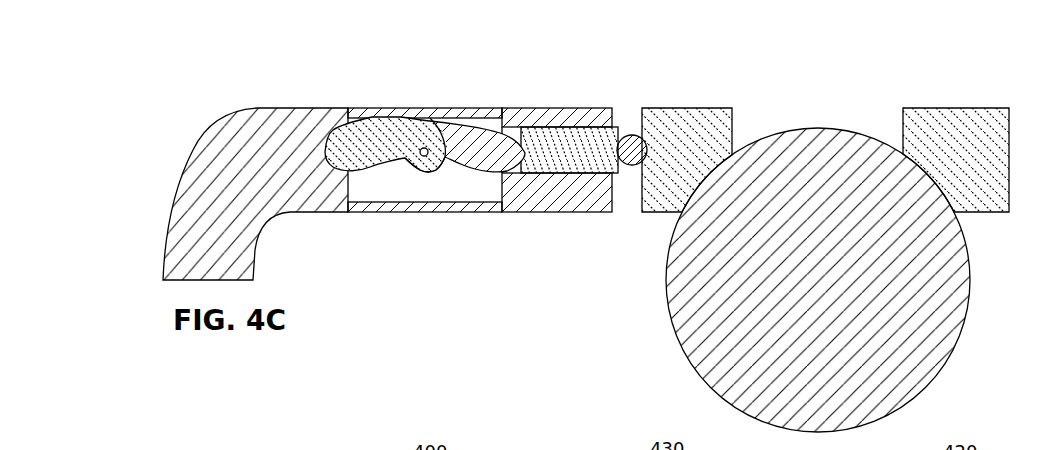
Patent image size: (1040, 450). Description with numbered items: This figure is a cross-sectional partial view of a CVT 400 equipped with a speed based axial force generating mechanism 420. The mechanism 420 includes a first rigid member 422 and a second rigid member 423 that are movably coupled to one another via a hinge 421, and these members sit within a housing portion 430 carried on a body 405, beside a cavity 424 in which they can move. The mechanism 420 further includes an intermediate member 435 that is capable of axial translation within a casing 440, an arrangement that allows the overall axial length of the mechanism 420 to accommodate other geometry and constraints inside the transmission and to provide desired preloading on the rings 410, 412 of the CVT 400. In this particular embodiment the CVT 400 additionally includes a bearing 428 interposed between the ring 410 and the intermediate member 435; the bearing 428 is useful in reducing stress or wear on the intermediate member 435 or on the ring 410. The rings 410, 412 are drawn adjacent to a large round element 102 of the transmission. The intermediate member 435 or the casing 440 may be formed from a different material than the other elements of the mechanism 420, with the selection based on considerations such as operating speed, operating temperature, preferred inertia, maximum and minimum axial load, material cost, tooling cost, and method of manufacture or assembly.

The tube 102 is at (937, 374).
The CVT 400 is at (191, 83).
The housing body 405 is at (210, 132).
The ring 410 is at (677, 108).
The ring 412 is at (957, 107).
The speed based AFG mechanism 420 is at (645, 283).
The hinge 421 is at (425, 148).
The first rigid member 422 is at (463, 160).
The second rigid member 423 is at (403, 163).
The cavity 424 is at (440, 187).
The bearing 428 is at (633, 135).
The housing 430 is at (420, 108).
The intermediate member 435 is at (620, 173).
The casing 440 is at (557, 212).